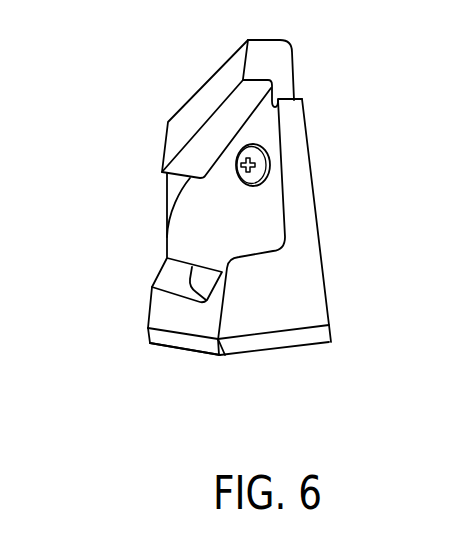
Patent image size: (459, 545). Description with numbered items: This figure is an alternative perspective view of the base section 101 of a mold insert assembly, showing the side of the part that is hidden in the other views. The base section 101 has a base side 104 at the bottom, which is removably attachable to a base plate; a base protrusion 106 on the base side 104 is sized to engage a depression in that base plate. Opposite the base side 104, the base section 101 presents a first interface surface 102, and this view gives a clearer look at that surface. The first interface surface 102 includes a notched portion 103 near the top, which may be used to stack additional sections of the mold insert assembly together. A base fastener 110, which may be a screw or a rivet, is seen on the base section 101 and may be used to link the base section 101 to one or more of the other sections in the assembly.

The base section 101 is at (130, 177).
The first interface surface 102 is at (303, 212).
The notched portion 103 is at (302, 102).
The base side 104 is at (312, 326).
The base protrusion 106 is at (183, 352).
The base fastener 110 is at (256, 166).